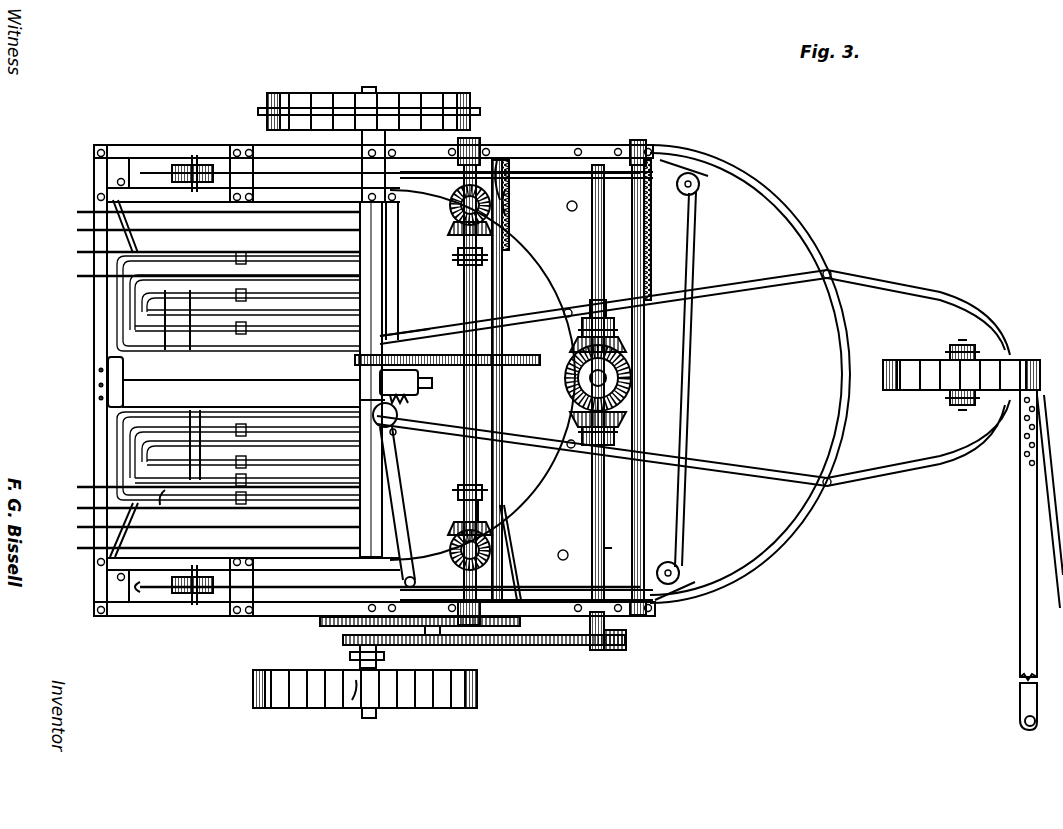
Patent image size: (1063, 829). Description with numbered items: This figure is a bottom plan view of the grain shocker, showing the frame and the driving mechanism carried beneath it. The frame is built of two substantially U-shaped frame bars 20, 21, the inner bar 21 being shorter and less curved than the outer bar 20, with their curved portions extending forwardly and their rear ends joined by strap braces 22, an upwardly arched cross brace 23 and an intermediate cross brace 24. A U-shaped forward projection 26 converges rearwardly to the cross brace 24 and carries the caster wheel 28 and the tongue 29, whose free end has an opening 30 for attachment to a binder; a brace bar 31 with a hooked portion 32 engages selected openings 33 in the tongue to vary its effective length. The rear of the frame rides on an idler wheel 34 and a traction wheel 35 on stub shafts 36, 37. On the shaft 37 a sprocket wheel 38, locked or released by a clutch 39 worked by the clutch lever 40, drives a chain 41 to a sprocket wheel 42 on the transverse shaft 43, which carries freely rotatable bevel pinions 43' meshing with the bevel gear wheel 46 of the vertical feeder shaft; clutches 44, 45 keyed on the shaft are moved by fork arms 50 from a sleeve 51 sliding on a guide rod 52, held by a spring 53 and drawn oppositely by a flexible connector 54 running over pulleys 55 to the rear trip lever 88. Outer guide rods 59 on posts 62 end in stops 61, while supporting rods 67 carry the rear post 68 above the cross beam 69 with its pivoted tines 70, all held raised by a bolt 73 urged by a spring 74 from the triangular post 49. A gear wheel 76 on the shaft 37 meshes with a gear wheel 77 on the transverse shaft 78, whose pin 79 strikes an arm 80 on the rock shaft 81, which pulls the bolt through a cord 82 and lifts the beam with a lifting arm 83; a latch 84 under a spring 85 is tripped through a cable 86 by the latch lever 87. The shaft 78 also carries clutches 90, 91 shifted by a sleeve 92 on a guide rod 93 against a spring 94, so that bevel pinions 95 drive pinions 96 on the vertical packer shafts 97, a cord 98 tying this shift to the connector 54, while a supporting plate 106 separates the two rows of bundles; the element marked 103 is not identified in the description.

The frame bar 20 is at (176, 146).
The frame bar 21 is at (176, 198).
The braces 22 is at (120, 168).
The cross brace 23 is at (94, 300).
The intermediate cross brace 24 is at (396, 252).
The forward projection 26 is at (750, 282).
The caster wheel 28 is at (912, 362).
The tongue 29 is at (1020, 506).
The opening 30 is at (1022, 720).
The brace bar 31 is at (1052, 553).
The hooked portion 32 is at (1042, 362).
The openings 33 is at (1022, 456).
The wheel 34 is at (291, 96).
The traction wheel 35 is at (478, 688).
The stub shaft 36 is at (368, 87).
The stub shaft 37 is at (376, 714).
The sprocket wheel 38 is at (355, 642).
The clutch 39 is at (352, 700).
The clutch lever 40 is at (350, 656).
The chain 41 is at (592, 650).
The sprocket wheel 42 is at (618, 650).
The shaft 43 is at (671, 551).
The bevel pinions 43' is at (624, 382).
The clutch 44 is at (590, 452).
The clutch 45 is at (592, 310).
The bevel gear wheel 46 is at (576, 398).
The post 49 is at (395, 292).
The fork arms 50 is at (616, 330).
The sleeve 51 is at (632, 382).
The guide rod 52 is at (634, 210).
The spring 53 is at (652, 218).
The flexible connector 54 is at (205, 165).
The pulleys 55 is at (700, 172).
The outer guide rods 59 is at (165, 506).
The stops 61 is at (152, 320).
The posts 62 is at (248, 245).
The supporting rods 67 is at (190, 342).
The rear post 68 is at (108, 376).
The cross beam 69 is at (360, 246).
The tines 70 is at (95, 498).
The bolt 73 is at (355, 360).
The spring 74 is at (358, 401).
The gear wheel 76 is at (320, 622).
The gear wheel 77 is at (472, 645).
The transverse shaft 78 is at (452, 210).
The pin 79 is at (432, 636).
The arm 80 is at (508, 645).
The rock shaft 81 is at (522, 540).
The cord 82 is at (432, 390).
The lifting arm 83 is at (410, 345).
The latch 84 is at (398, 428).
The spring 85 is at (416, 584).
The cable 86 is at (300, 587).
The latch lever 87 is at (105, 522).
The trip lever 88 is at (113, 214).
The clutch 90 is at (458, 498).
The clutch 91 is at (452, 256).
The sleeve 92 is at (503, 292).
The guide rod 93 is at (505, 190).
The spring 94 is at (510, 216).
The bevel pinions 95 is at (494, 226).
The pinions 96 is at (482, 150).
The vertical shafts 97 is at (497, 160).
The cord 98 is at (516, 520).
The eye 103 is at (575, 210).
The supporting plate 106 is at (247, 386).